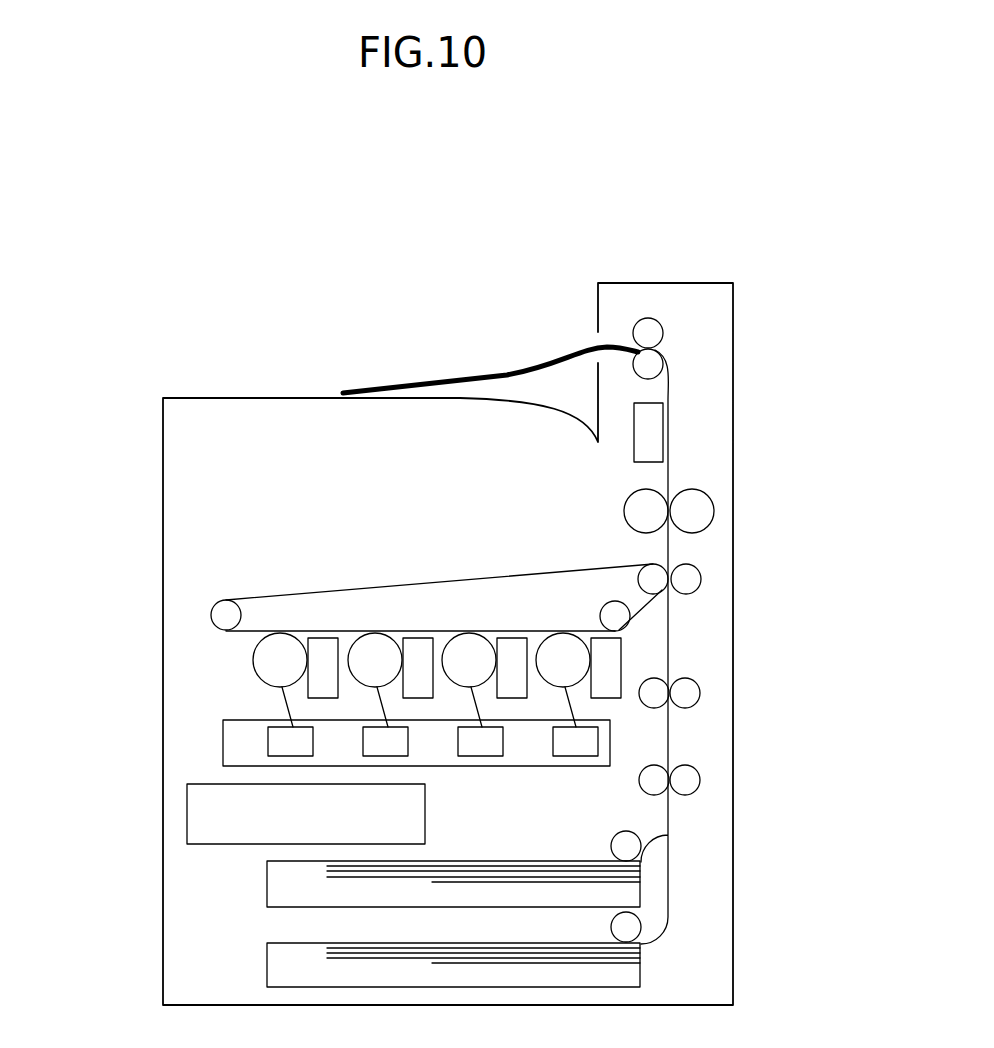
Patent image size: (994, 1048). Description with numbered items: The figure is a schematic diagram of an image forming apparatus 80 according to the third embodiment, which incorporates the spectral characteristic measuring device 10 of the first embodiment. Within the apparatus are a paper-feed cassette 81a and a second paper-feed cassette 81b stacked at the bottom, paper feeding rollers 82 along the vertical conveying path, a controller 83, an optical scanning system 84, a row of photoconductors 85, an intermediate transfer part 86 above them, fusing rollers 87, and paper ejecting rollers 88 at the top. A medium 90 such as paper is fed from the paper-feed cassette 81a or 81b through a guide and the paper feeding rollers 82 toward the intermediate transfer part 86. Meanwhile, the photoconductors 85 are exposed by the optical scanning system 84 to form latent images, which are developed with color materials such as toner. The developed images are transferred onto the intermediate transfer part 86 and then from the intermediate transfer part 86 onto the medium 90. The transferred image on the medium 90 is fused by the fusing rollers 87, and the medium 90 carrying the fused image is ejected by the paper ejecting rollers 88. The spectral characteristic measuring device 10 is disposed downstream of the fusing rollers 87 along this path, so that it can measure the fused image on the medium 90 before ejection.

The image forming apparatus 80 is at (145, 244).
The medium 90 is at (541, 362).
The paper ejecting rollers 88 is at (649, 328).
The spectral characteristic measuring device 10 is at (653, 434).
The fusing rollers 87 is at (705, 510).
The intermediate transfer part 86 is at (245, 603).
The photoconductors 85 is at (253, 658).
The optical scanning system 84 is at (233, 740).
The controller 83 is at (205, 812).
The paper feeding rollers 82 is at (700, 775).
The paper-feed cassette 81a is at (267, 883).
The paper-feed cassette 81b is at (267, 963).